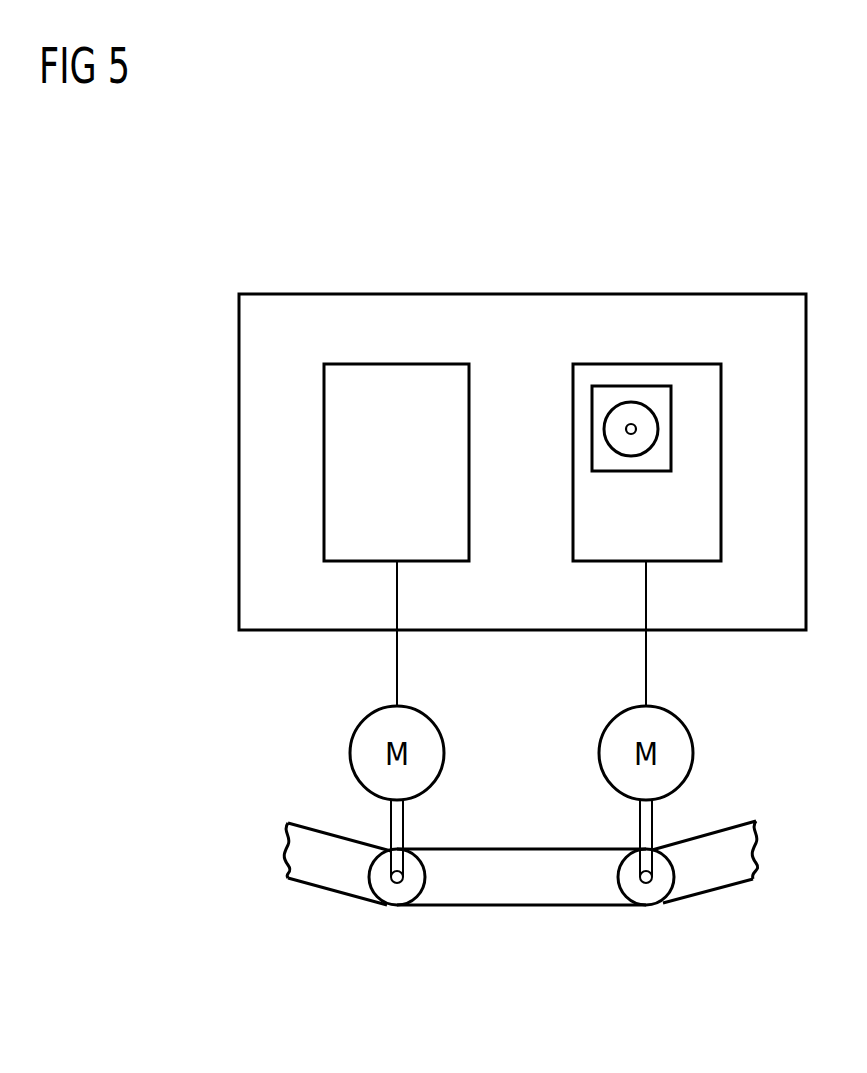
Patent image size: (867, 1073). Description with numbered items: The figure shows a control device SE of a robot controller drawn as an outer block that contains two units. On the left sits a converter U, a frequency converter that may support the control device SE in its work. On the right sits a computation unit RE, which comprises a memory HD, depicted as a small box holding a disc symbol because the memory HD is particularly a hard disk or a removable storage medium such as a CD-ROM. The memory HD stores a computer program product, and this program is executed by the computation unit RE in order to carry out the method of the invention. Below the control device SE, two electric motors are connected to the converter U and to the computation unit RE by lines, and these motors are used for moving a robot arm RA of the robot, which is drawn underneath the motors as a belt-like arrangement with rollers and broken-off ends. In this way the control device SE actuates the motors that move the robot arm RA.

The control device SE is at (504, 293).
The converter U is at (399, 363).
The computation unit RE is at (632, 363).
The memory HD is at (660, 476).
The robot arm RA is at (521, 906).